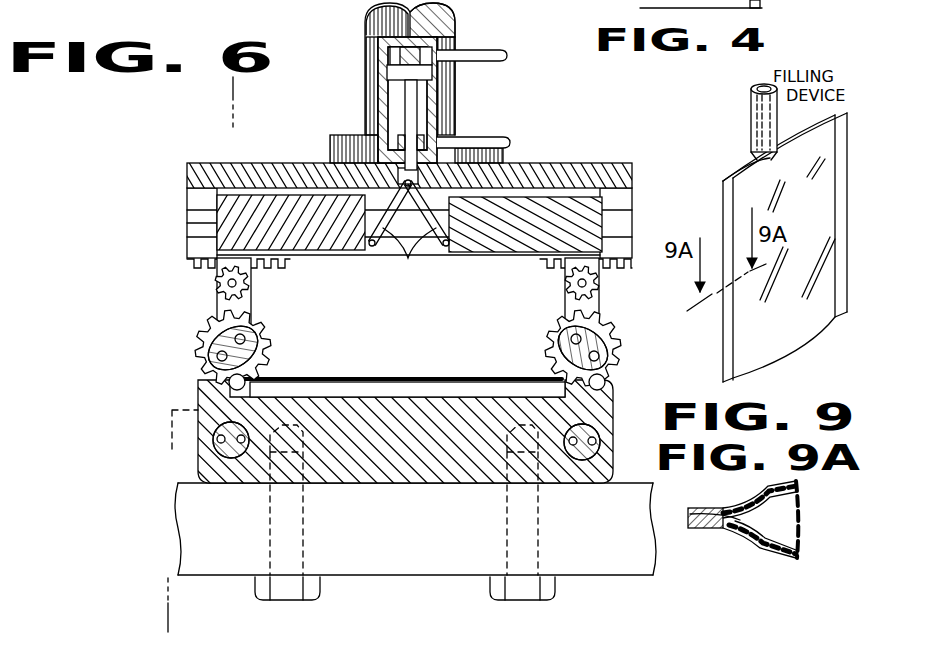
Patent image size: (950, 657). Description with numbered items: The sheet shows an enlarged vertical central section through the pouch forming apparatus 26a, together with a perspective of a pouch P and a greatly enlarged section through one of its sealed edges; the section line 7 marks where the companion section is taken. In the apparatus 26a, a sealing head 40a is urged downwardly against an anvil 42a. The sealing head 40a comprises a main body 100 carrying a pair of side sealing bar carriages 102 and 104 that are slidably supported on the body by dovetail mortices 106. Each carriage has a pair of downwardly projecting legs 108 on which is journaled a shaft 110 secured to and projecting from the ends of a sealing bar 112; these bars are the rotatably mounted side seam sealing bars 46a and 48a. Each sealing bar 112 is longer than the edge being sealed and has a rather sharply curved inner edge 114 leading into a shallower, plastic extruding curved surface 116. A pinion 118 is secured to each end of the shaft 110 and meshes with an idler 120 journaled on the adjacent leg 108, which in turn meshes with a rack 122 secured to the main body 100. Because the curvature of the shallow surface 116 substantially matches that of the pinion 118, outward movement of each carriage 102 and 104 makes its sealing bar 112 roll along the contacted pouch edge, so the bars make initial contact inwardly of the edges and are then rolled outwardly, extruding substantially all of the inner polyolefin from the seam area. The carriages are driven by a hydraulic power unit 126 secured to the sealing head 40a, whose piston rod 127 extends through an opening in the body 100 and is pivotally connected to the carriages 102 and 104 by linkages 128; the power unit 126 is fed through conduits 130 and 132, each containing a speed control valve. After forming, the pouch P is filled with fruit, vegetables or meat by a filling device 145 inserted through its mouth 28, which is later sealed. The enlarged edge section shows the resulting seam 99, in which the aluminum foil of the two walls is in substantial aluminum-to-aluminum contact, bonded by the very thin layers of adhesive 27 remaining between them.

In FIG. 6, the section line 7- 7 is at (224, 92).
In FIG. 6, the pouch forming apparatus 26a is at (166, 158).
In FIG. 6, the sealing head 40a is at (190, 176).
In FIG. 6, the dovetail mortices 106 is at (194, 208).
In FIG. 6, the main body 100 is at (548, 168).
In FIG. 6, the side sealing bar carriage 102 is at (262, 200).
In FIG. 6, the side sealing bar carriage 104 is at (480, 246).
In FIG. 6, the linkages 128 is at (408, 258).
In FIG. 6, the piston rod 127 is at (406, 107).
In FIG. 6, the hydraulic power unit 126 is at (445, 93).
In FIG. 6, the conduit 130 is at (482, 52).
In FIG. 6, the conduit 132 is at (457, 140).
In FIG. 6, the rack 122 is at (190, 262).
In FIG. 6, the idler 120 is at (215, 286).
In FIG. 6, the pinion 118 is at (206, 316).
In FIG. 6, the legs 108 is at (252, 306).
In FIG. 6, the side seam sealing bar 46a is at (238, 345).
In FIG. 6, the side seam sealing bar 48a is at (618, 352).
In FIG. 6, the shaft 110 is at (244, 338).
In FIG. 6, the sealing bar 112 is at (226, 355).
In FIG. 6, the plastic extruding curved surface 116 is at (228, 378).
In FIG. 6, the curved inner edge 114 is at (350, 378).
In FIG. 6, the pouch P is at (397, 379).
In FIG. 9, the pouch P is at (797, 328).
In FIG. 9A, the pouch P is at (800, 495).
In FIG. 6, the anvil 42a is at (198, 466).
In FIG. 9, the filling device 145 is at (752, 128).
In FIG. 9, the mouth 28 is at (748, 178).
In FIG. 9A, the seams 99 is at (719, 516).
In FIG. 9A, the adhesive 27 is at (692, 514).